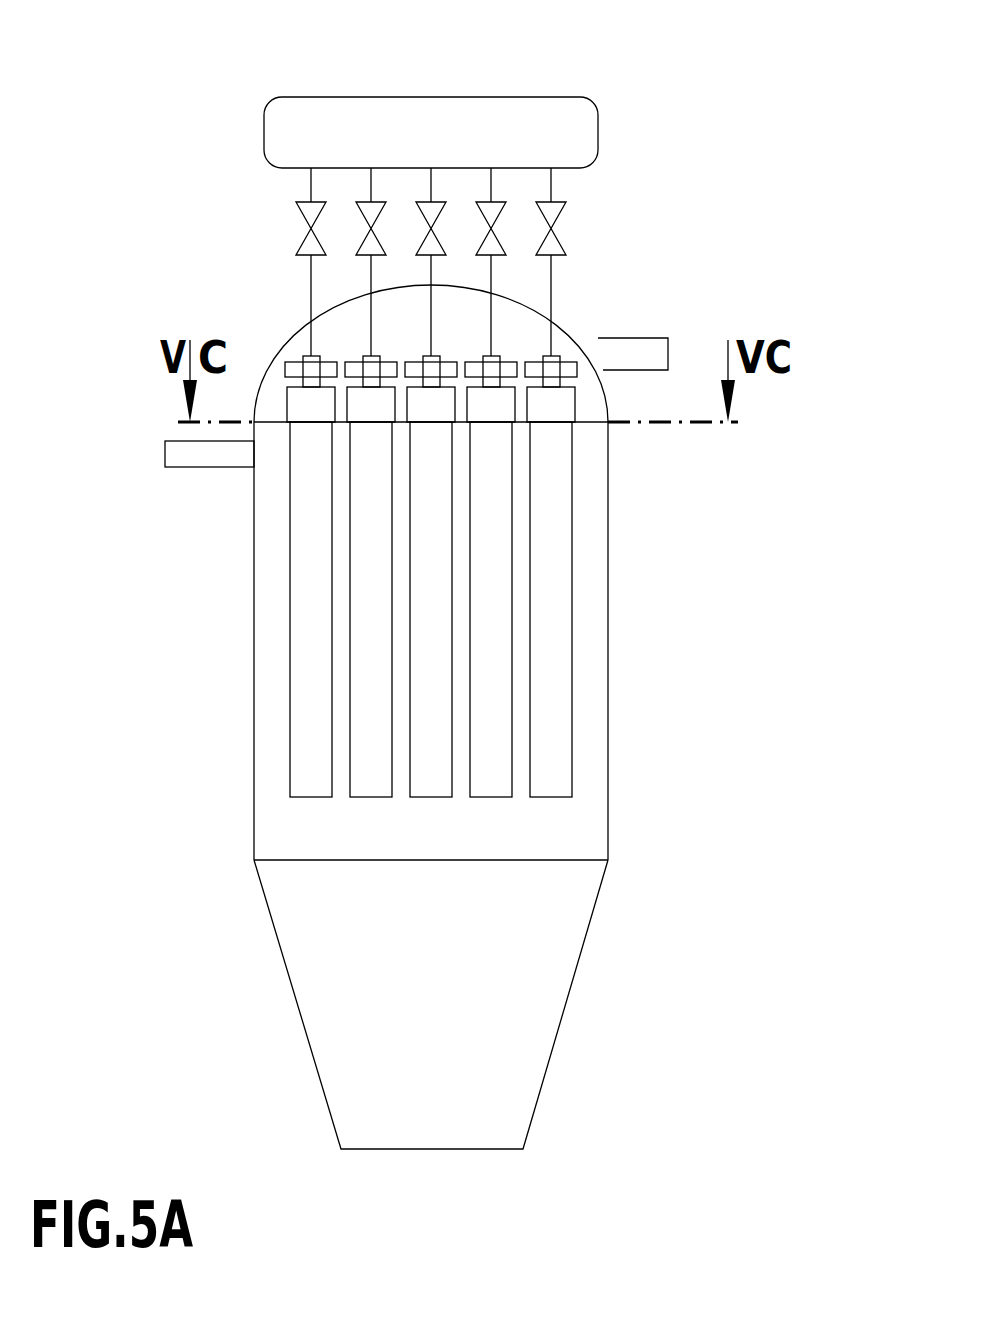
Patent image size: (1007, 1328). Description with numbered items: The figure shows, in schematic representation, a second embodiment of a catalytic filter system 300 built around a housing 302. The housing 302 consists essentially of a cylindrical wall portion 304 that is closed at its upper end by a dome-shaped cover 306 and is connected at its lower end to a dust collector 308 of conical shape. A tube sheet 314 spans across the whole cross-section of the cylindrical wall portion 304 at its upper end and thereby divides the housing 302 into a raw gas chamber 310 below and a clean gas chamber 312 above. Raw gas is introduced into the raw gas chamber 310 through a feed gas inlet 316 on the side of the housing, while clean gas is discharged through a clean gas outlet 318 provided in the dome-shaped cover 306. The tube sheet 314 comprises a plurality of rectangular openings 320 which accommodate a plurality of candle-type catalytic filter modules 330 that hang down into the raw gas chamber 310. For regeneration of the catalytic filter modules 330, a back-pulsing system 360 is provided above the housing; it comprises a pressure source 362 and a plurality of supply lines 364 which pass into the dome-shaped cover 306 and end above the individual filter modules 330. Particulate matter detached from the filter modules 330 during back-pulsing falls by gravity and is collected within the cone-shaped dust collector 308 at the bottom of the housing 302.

The catalytic filter system 300 is at (486, 693).
The housing 302 is at (630, 710).
The cylindrical wall portion 304 is at (254, 643).
The dome-shaped cover 306 is at (288, 338).
The dust collector 308 is at (584, 948).
The raw gas chamber 310 is at (567, 826).
The clean gas chamber 312 is at (508, 333).
The tube sheet 314 is at (590, 422).
The feed gas inlet 316 is at (186, 467).
The clean gas outlet 318 is at (622, 338).
The rectangular openings 320 is at (283, 436).
The candle-type catalytic filter modules 330 is at (312, 754).
The back-pulsing system 360 is at (472, 72).
The pressure source 362 is at (454, 151).
The supply lines 364 is at (576, 230).